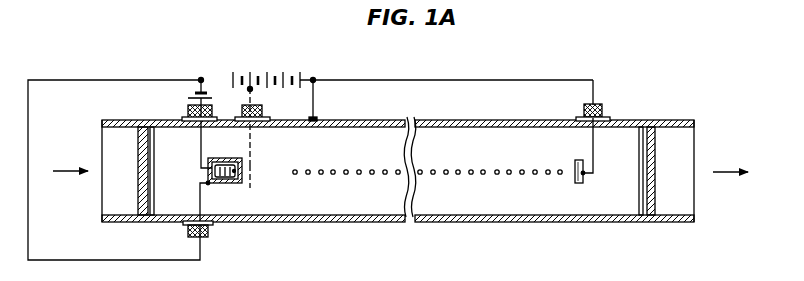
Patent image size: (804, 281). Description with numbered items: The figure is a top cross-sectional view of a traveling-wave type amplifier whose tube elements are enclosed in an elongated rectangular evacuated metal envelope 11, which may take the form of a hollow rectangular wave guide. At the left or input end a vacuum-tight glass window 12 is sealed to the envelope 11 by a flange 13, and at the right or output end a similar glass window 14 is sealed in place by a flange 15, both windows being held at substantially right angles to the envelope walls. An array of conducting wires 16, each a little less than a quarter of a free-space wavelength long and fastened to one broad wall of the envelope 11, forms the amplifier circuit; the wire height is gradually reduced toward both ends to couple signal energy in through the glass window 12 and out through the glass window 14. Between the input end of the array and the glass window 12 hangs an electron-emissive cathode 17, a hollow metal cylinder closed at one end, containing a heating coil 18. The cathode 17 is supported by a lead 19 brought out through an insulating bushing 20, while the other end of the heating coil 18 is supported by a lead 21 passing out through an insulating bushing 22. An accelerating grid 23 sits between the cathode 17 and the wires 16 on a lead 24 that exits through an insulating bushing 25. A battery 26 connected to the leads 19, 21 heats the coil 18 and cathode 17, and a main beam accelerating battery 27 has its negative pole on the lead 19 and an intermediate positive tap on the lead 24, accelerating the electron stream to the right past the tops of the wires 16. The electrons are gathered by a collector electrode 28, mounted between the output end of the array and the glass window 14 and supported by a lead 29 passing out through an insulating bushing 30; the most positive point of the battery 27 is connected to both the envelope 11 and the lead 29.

The envelope 11 is at (455, 120).
The glass window 12 is at (137, 158).
The flange 13 is at (157, 194).
The glass window 14 is at (657, 160).
The flange 15 is at (641, 213).
The conducting wires 16 is at (384, 176).
The electron-emissive cathode 17 is at (216, 157).
The heating coil 18 is at (233, 176).
The lead 19 is at (202, 198).
The insulating bushing 20 is at (206, 237).
The lead 21 is at (198, 154).
The insulating bushing 22 is at (206, 105).
The accelerating grid 23 is at (256, 172).
The lead 24 is at (254, 138).
The insulating bushing 25 is at (262, 106).
The battery 26 is at (190, 95).
The main beam accelerating battery 27 is at (255, 72).
The collector electrode 28 is at (577, 184).
The lead 29 is at (592, 142).
The insulating bushing 30 is at (601, 105).